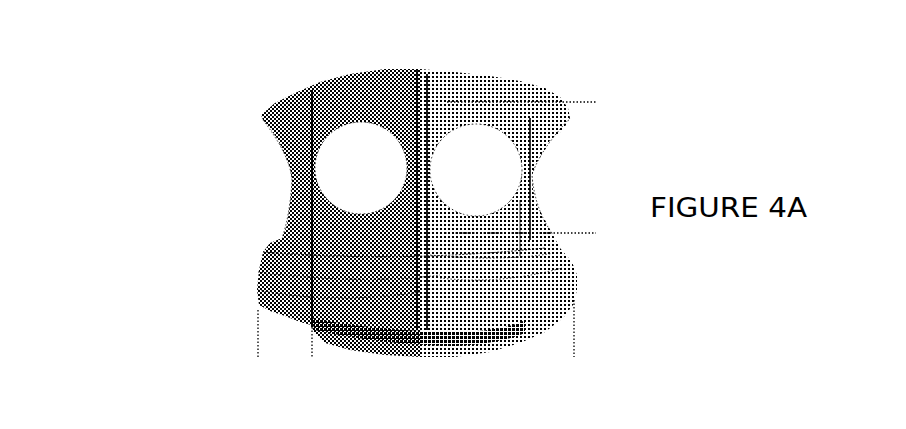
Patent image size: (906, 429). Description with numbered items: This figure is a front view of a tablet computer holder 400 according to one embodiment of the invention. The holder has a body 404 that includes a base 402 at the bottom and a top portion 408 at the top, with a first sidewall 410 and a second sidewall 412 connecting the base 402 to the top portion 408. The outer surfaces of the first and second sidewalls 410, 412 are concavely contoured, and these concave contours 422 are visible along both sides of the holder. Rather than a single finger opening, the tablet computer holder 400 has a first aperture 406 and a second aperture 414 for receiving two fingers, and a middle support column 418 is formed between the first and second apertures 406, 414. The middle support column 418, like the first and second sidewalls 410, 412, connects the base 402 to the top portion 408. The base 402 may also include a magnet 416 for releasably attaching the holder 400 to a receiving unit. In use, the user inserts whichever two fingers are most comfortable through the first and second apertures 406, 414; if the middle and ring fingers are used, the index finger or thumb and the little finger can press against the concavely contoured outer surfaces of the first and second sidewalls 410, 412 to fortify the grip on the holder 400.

The tablet computer holder 400 is at (150, 80).
The base 402 is at (558, 293).
The body 404 is at (289, 238).
The first aperture 406 is at (362, 174).
The top portion 408 is at (412, 77).
The first sidewall 410 is at (292, 173).
The second sidewall 412 is at (536, 175).
The second aperture 414 is at (470, 173).
The magnet 416 is at (298, 333).
The middle support column 418 is at (407, 180).
The concave contours 422 is at (289, 208).